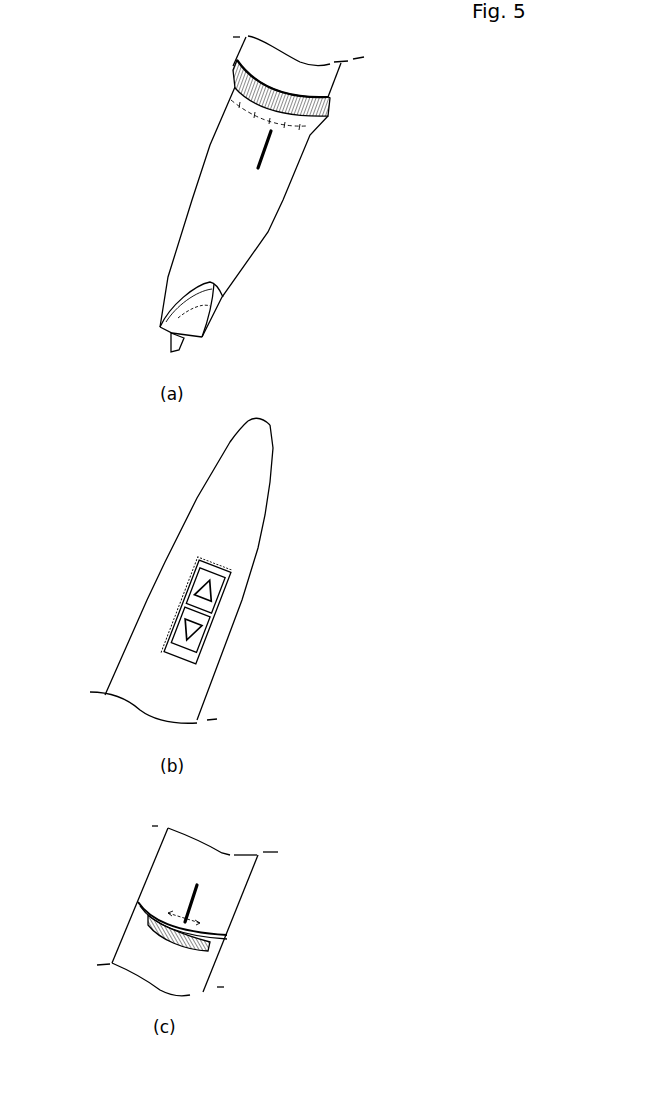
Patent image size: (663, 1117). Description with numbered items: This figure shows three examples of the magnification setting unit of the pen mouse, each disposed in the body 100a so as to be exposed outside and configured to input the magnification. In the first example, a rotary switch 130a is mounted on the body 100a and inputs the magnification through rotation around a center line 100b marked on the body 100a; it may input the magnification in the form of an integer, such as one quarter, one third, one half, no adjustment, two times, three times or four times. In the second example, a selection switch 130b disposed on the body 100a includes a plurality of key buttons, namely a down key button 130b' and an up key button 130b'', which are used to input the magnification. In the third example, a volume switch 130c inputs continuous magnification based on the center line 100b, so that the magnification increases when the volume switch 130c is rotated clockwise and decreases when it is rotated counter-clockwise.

The body 100a is at (210, 135).
The center line 100b is at (264, 155).
The rotary switch 130a is at (329, 110).
The selection switch 130b is at (266, 592).
The down key button 130b' is at (265, 601).
The up key button 130b'' is at (253, 638).
The volume switch 130c is at (204, 952).